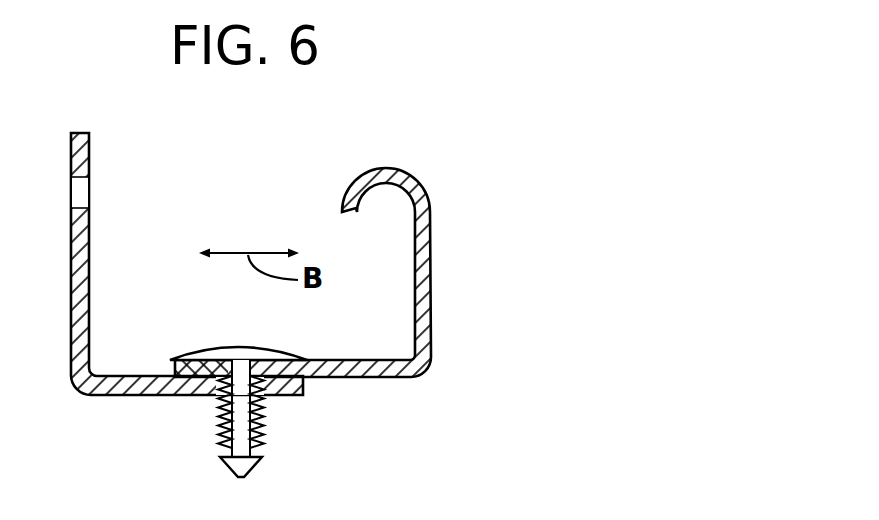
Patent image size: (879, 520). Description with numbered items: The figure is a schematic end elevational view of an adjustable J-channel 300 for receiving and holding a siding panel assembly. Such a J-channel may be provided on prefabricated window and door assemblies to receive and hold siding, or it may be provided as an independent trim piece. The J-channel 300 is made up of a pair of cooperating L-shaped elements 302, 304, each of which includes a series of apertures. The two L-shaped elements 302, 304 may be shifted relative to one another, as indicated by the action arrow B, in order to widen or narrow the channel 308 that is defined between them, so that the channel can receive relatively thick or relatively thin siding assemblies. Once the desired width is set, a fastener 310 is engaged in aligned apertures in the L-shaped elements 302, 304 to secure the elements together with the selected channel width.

The adjustable J-channel 300 is at (424, 113).
The L-shaped element 302 is at (290, 397).
The L-shaped element 304 is at (432, 263).
The channel 308 is at (211, 203).
The fastener 310 is at (195, 347).